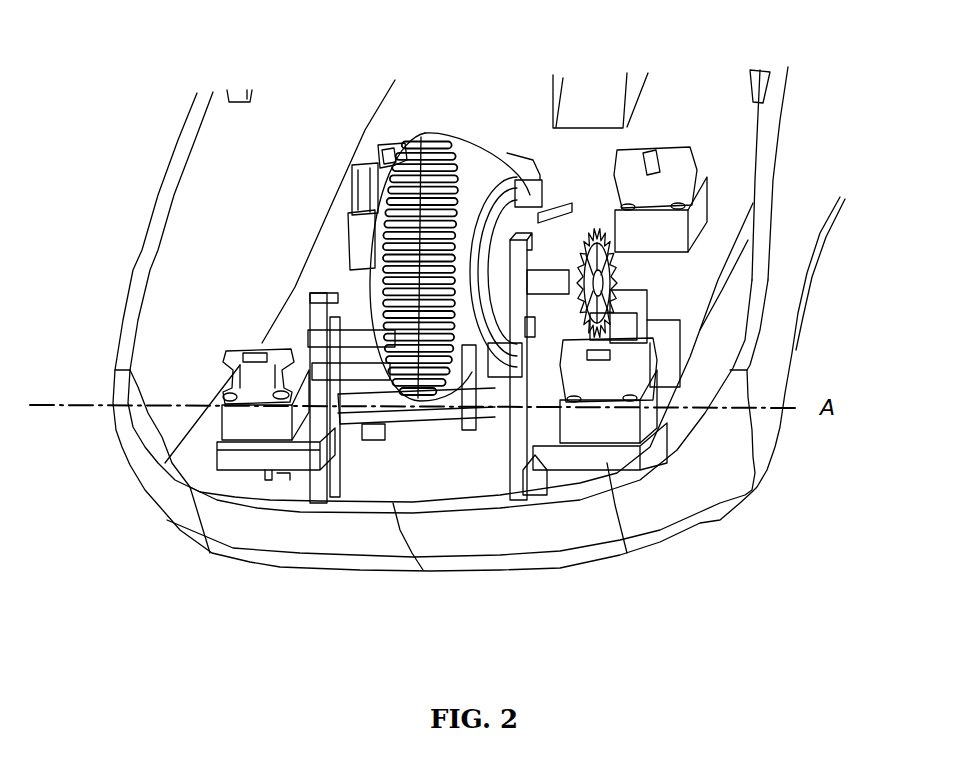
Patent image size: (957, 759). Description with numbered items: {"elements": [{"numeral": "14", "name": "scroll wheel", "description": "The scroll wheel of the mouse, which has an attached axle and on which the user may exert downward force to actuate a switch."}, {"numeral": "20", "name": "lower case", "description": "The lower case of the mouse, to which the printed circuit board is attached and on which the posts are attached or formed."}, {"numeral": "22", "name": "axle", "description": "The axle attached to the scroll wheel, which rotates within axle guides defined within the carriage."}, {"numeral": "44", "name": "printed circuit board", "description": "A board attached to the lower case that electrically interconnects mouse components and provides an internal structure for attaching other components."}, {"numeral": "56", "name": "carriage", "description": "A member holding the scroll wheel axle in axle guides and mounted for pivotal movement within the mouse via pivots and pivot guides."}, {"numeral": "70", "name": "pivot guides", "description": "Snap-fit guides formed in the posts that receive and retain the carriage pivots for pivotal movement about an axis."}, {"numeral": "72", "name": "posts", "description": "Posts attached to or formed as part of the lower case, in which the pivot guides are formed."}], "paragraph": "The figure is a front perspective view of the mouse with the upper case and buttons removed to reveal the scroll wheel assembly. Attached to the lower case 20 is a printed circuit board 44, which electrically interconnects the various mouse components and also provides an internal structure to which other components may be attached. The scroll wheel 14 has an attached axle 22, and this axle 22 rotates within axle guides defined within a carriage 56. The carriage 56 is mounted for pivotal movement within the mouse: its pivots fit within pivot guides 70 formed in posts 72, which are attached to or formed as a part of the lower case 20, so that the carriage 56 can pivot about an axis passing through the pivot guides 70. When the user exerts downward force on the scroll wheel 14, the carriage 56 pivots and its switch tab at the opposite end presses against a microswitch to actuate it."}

The motor 14 is at (490, 136).
The housing 20 is at (590, 528).
The gear 22 is at (548, 262).
The housing wall 44 is at (727, 173).
The left switch block 56 is at (310, 352).
The right switch block platform 70 is at (523, 420).
The support plates 72 is at (507, 432).